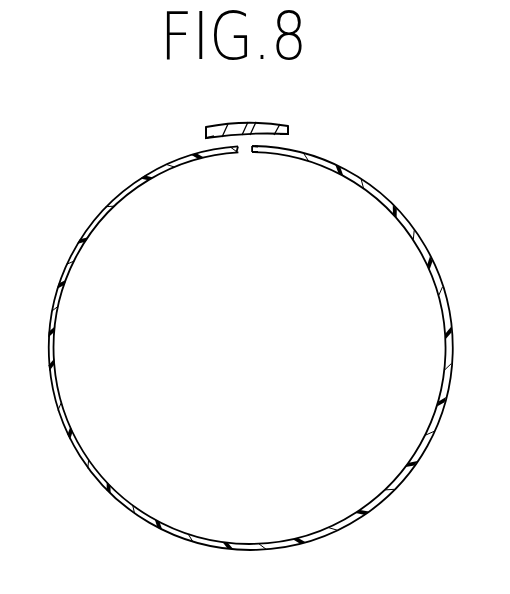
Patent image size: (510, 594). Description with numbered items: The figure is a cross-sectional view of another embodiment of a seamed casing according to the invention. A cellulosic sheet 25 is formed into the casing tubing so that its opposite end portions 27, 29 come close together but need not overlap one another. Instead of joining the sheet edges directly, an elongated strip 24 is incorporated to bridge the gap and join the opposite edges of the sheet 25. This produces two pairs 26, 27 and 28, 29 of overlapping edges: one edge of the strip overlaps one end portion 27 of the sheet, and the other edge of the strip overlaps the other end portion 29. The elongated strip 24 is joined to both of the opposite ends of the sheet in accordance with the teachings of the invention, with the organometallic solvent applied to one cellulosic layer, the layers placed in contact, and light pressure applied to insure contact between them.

The elongated strip 24 is at (248, 125).
The sheet 25 is at (63, 407).
The overlapping edge 26 is at (216, 127).
The opposite end portion of the sheet 27 is at (226, 150).
The overlapping edge 28 is at (289, 127).
The opposite end portion of the sheet 29 is at (267, 153).